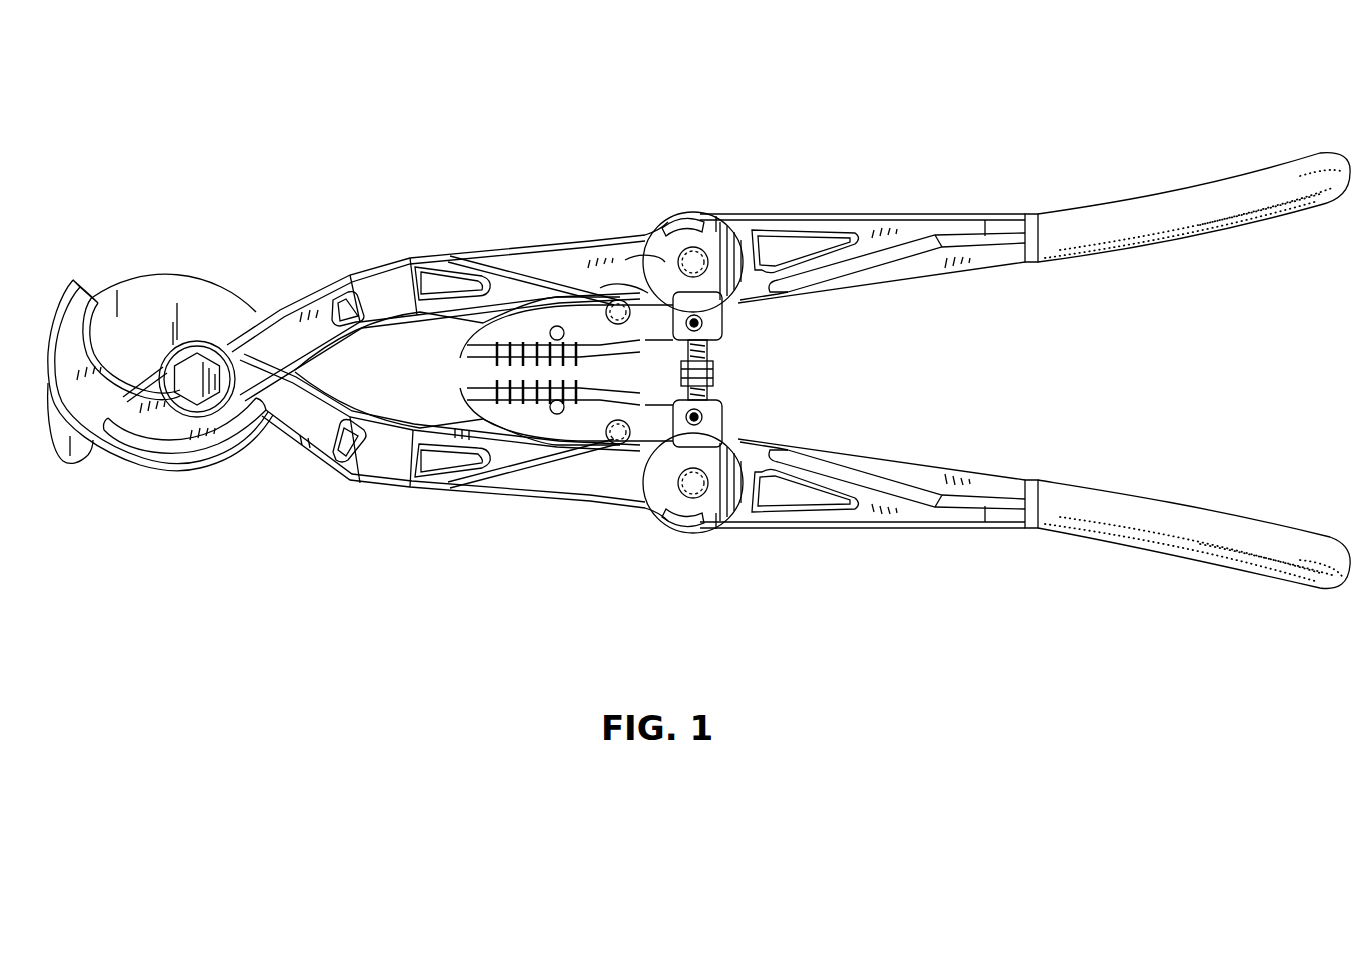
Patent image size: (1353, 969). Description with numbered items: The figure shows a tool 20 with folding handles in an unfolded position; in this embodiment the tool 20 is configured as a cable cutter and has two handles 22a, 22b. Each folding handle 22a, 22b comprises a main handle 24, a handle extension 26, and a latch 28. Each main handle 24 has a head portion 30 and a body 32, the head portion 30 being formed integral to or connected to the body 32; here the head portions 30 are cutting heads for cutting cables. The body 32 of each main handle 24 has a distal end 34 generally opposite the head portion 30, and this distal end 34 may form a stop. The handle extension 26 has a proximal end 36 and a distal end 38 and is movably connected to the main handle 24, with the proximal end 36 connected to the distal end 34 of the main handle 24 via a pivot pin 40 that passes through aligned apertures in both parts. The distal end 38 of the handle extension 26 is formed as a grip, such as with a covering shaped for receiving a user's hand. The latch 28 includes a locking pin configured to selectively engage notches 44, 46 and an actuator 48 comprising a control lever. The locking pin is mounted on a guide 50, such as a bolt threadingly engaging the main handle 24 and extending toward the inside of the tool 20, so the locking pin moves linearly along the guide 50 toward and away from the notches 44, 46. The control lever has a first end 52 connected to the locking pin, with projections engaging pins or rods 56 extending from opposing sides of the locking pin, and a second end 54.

The tool 20 is at (408, 168).
The handle 22a is at (893, 296).
The handle 22b is at (932, 578).
The main handle 24 is at (510, 500).
The handle extension 26 is at (1000, 280).
The latch 28 is at (732, 369).
The head portion 30 is at (183, 262).
The body 32 is at (383, 272).
The distal end 34 is at (645, 218).
The proximal end 36 is at (678, 367).
The distal end 38 is at (1236, 170).
The pivot pin 40 is at (700, 256).
The notch 44 is at (447, 371).
The notch 46 is at (648, 238).
The actuator 48 is at (470, 434).
The guide 50 is at (708, 350).
The first end 52 is at (463, 387).
The second end 54 is at (681, 400).
The pins or rods 56 is at (615, 436).